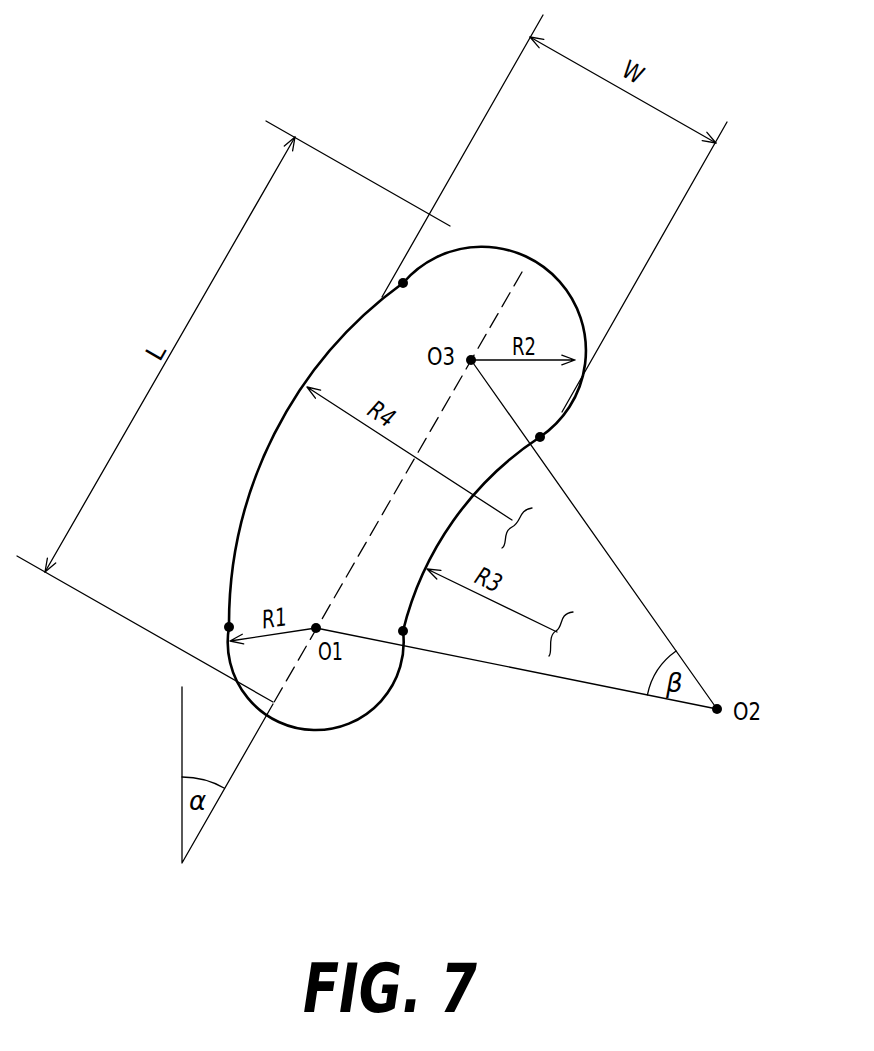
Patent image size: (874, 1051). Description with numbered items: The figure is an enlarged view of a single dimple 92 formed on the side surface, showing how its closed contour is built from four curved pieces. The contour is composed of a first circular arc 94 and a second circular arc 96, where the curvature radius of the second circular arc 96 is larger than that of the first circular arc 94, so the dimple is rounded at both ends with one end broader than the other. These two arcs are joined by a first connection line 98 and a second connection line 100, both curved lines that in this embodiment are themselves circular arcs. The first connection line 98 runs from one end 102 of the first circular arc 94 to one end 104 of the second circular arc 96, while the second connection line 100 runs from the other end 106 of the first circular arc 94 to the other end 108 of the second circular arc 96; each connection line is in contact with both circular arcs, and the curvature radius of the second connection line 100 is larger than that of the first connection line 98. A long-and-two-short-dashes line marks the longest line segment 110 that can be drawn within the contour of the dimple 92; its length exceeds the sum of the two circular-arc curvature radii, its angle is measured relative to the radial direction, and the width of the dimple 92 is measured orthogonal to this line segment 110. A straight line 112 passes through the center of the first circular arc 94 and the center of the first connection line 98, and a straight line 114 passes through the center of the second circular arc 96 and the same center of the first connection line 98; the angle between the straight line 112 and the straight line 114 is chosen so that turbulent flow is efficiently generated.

The dimple 92 is at (397, 522).
The first circular arc 94 is at (333, 713).
The second circular arc 96 is at (557, 297).
The first connection line 98 is at (450, 535).
The second connection line 100 is at (277, 427).
The one end of the first circular arc 102 is at (403, 631).
The one end of the second circular arc 104 is at (540, 438).
The other end of the first circular arc 106 is at (229, 627).
The other end of the second circular arc 108 is at (403, 283).
The longest line segment 110 is at (347, 573).
The straight line passing through centers O1 and O2 112 is at (548, 678).
The straight line passing through centers O3 and O2 114 is at (633, 587).